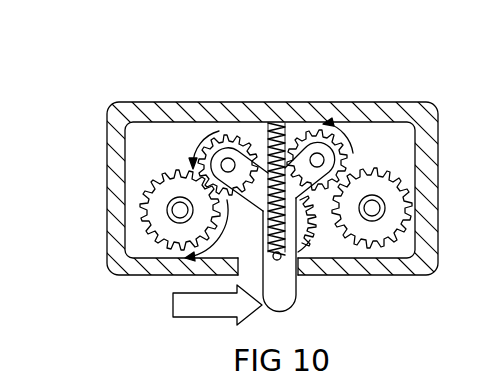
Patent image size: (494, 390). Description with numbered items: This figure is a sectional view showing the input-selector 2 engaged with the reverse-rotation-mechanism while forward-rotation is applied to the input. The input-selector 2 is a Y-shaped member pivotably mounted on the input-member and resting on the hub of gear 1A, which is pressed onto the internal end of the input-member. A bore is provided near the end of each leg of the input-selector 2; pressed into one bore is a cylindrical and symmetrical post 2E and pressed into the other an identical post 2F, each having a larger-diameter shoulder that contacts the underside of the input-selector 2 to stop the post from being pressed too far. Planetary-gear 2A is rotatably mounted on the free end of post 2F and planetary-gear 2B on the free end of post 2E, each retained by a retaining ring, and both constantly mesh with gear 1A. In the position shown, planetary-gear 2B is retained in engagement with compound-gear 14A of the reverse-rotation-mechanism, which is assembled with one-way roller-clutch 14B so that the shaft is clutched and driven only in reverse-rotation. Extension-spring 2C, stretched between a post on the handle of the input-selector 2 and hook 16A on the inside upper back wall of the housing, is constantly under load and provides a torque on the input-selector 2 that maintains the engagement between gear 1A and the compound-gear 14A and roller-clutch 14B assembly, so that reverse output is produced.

The gear 1A is at (300, 216).
The input-selector 2 is at (287, 298).
The planetary-gear 2A is at (294, 124).
The planetary-gear 2B is at (212, 140).
The extension-spring 2C is at (300, 273).
The post 2E is at (228, 165).
The post 2F is at (317, 160).
The compound-gear 14A is at (168, 228).
The one-way roller-clutch 14B is at (170, 202).
The hook 16A is at (308, 128).